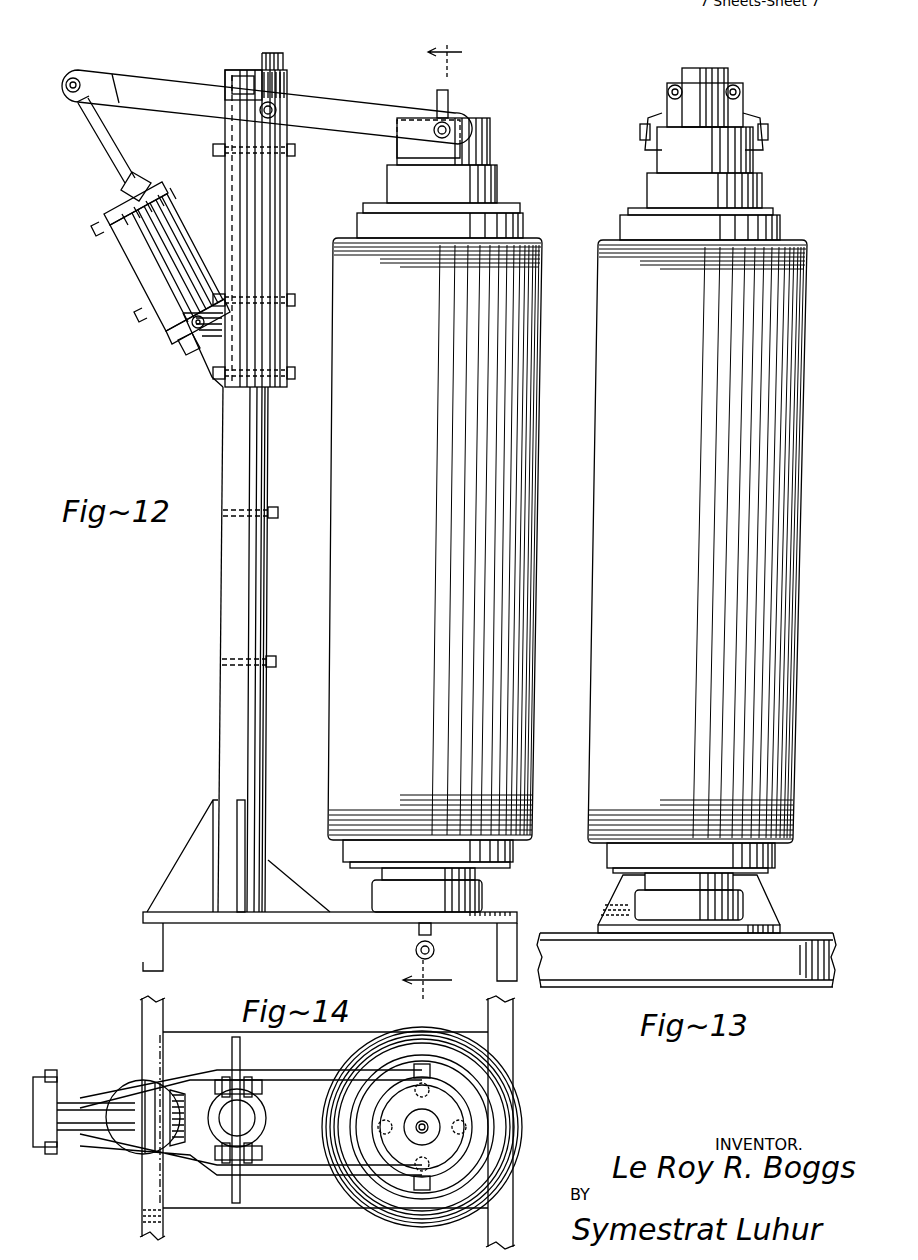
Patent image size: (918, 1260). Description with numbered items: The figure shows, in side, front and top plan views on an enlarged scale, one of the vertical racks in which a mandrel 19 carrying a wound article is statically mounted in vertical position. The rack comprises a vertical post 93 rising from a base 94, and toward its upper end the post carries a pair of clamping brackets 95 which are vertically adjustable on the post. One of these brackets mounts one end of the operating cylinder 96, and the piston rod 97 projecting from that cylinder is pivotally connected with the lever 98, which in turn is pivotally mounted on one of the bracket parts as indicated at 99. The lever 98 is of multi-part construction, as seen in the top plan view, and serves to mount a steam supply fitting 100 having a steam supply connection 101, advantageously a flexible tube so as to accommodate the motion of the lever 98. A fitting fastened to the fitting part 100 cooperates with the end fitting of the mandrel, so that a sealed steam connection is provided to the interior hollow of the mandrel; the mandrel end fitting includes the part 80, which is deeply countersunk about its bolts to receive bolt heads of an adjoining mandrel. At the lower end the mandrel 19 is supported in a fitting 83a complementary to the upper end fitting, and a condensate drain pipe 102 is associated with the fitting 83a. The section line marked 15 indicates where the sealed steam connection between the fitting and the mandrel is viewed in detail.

In FIG. 12, the section line for FIG. 15 is at (439, 526).
In FIG. 12, the mandrel 19 is at (586, 218).
In FIG. 13, the mandrel 19 is at (609, 233).
In FIG. 12, the end fitting part 80 is at (478, 880).
In FIG. 12, the lower fitting 83a is at (485, 908).
In FIG. 13, the lower fitting 83a is at (748, 912).
In FIG. 12, the vertical post 93 is at (221, 608).
In FIG. 14, the vertical post 93 is at (250, 1118).
In FIG. 12, the base 94 is at (272, 923).
In FIG. 13, the base 94 is at (610, 975).
In FIG. 12, the clamping brackets 95 is at (228, 207).
In FIG. 13, the clamping brackets 95 is at (745, 106).
In FIG. 14, the clamping brackets 95 is at (255, 1136).
In FIG. 12, the operating cylinder 96 is at (134, 270).
In FIG. 14, the operating cylinder 96 is at (127, 1083).
In FIG. 12, the piston rod 97 is at (104, 140).
In FIG. 14, the piston rod 97 is at (95, 1140).
In FIG. 12, the lever 98 is at (195, 86).
In FIG. 13, the lever 98 is at (648, 152).
In FIG. 14, the lever 98 is at (284, 1070).
In FIG. 12, the pivot 99 is at (276, 108).
In FIG. 12, the steam supply fitting 100 is at (463, 130).
In FIG. 14, the steam supply fitting 100 is at (450, 1146).
In FIG. 12, the steam supply connection 101 is at (450, 106).
In FIG. 13, the steam supply connection 101 is at (680, 110).
In FIG. 14, the steam supply connection 101 is at (428, 1126).
In FIG. 12, the condensate drain pipe 102 is at (414, 950).